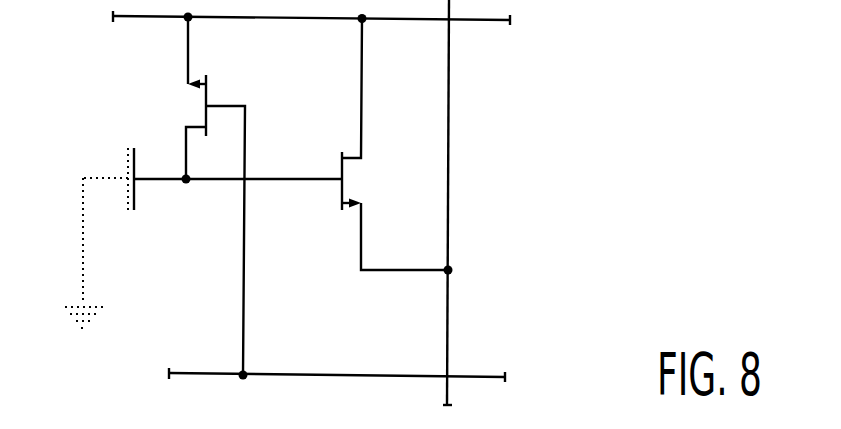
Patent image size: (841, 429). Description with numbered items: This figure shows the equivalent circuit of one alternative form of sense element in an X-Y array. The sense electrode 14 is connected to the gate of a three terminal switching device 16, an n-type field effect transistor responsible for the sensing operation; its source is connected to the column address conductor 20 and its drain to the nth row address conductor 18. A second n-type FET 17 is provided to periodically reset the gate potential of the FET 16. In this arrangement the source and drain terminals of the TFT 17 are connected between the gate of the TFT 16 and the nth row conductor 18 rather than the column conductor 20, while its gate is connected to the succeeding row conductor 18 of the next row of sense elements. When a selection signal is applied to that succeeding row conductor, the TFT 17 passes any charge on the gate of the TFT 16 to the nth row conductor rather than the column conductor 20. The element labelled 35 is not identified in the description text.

The sense electrode 14 is at (136, 203).
The three terminal switching device 16 is at (339, 163).
The second n-type FET 17 is at (208, 89).
The row address conductor 18 is at (483, 20).
The column address conductor 20 is at (449, 163).
The storage capacitor 35 is at (108, 144).